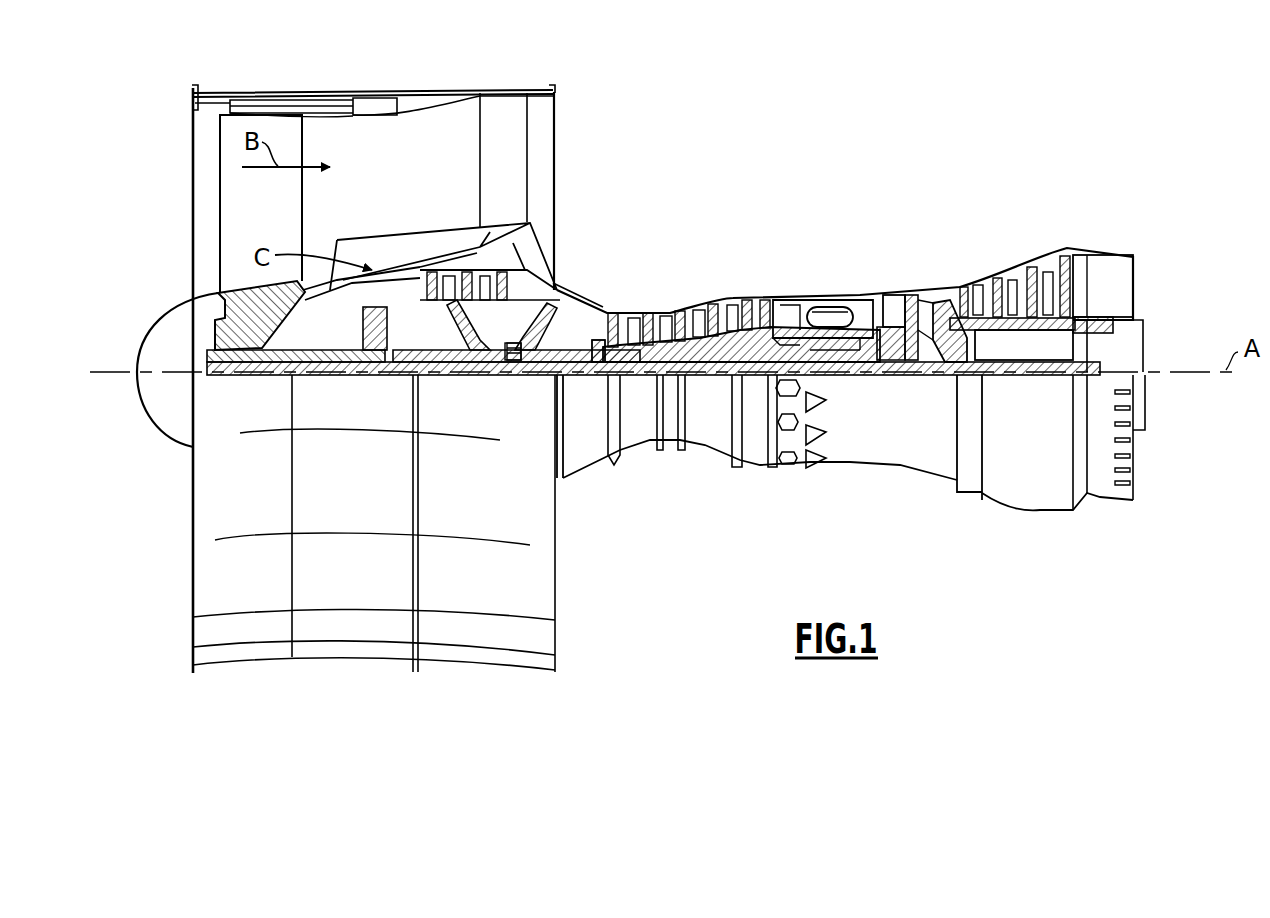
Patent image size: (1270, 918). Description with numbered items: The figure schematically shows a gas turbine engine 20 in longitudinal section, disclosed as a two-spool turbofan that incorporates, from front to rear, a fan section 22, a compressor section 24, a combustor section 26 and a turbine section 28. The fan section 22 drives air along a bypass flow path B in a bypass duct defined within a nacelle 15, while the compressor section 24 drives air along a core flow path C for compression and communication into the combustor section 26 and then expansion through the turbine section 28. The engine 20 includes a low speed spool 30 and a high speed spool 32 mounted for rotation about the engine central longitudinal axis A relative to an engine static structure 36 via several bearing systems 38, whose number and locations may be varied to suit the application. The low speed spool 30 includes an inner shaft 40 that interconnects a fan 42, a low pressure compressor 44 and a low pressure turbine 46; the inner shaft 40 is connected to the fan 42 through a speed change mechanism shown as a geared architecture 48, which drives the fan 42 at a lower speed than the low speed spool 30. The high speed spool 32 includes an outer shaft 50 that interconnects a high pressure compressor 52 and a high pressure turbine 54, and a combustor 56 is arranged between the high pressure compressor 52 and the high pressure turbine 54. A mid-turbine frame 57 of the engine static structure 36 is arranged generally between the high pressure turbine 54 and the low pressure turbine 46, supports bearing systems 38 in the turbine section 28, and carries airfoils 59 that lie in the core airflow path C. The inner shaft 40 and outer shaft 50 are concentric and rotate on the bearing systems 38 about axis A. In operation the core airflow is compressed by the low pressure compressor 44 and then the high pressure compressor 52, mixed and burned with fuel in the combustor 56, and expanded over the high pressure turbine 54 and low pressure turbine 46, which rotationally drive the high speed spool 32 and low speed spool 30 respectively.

The nacelle 15 is at (375, 98).
The gas turbine engine 20 is at (836, 142).
The fan section 22 is at (302, 84).
The compressor section 24 is at (606, 280).
The combustor section 26 is at (828, 270).
The turbine section 28 is at (976, 234).
The low speed spool 30 is at (712, 380).
The high speed spool 32 is at (748, 335).
The engine static structure 36 is at (752, 470).
The bearing systems 38 is at (514, 376).
The inner shaft 40 is at (573, 376).
The fan 42 is at (275, 219).
The low pressure compressor 44 is at (540, 226).
The low pressure turbine 46 is at (1018, 264).
The geared architecture 48 is at (376, 376).
The outer shaft 50 is at (830, 376).
The high pressure compressor 52 is at (684, 318).
The high pressure turbine 54 is at (893, 294).
The combustor 56 is at (829, 314).
The mid-turbine frame 57 is at (940, 276).
The airfoils 59 is at (968, 342).